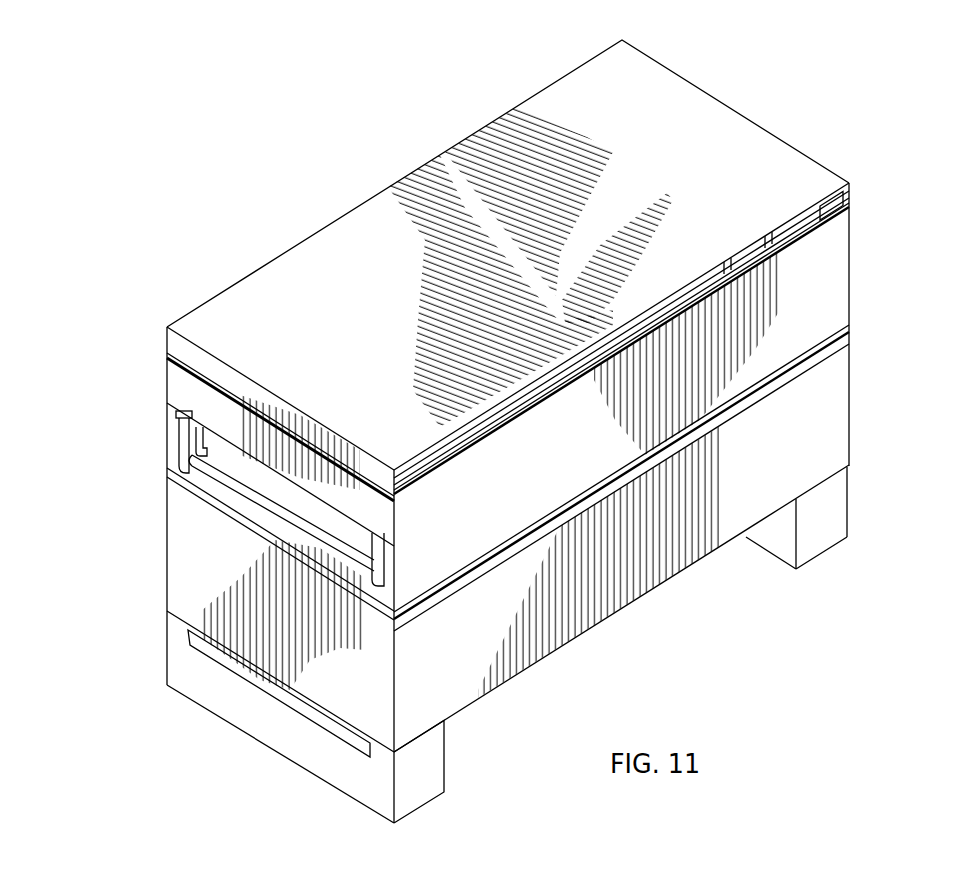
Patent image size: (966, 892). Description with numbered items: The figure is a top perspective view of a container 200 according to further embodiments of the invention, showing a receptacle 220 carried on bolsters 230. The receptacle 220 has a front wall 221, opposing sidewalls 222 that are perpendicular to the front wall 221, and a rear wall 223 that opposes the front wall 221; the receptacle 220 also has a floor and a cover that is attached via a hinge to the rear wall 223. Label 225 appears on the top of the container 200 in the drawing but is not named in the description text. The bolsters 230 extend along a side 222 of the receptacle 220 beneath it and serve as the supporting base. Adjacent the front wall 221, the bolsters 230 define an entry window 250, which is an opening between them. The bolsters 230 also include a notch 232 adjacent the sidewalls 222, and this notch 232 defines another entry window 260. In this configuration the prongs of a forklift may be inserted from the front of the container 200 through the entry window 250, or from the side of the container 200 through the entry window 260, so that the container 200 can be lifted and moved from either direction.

The container 200 is at (748, 86).
The receptacle 220 is at (866, 250).
The front wall 221 is at (545, 495).
The sidewall 222 is at (365, 697).
The rear wall 223 is at (384, 179).
The lid top panel 225 is at (335, 331).
The bolster 230 is at (440, 796).
The notch 232 is at (207, 656).
The entry window 250 is at (633, 639).
The entry window 260 is at (320, 728).